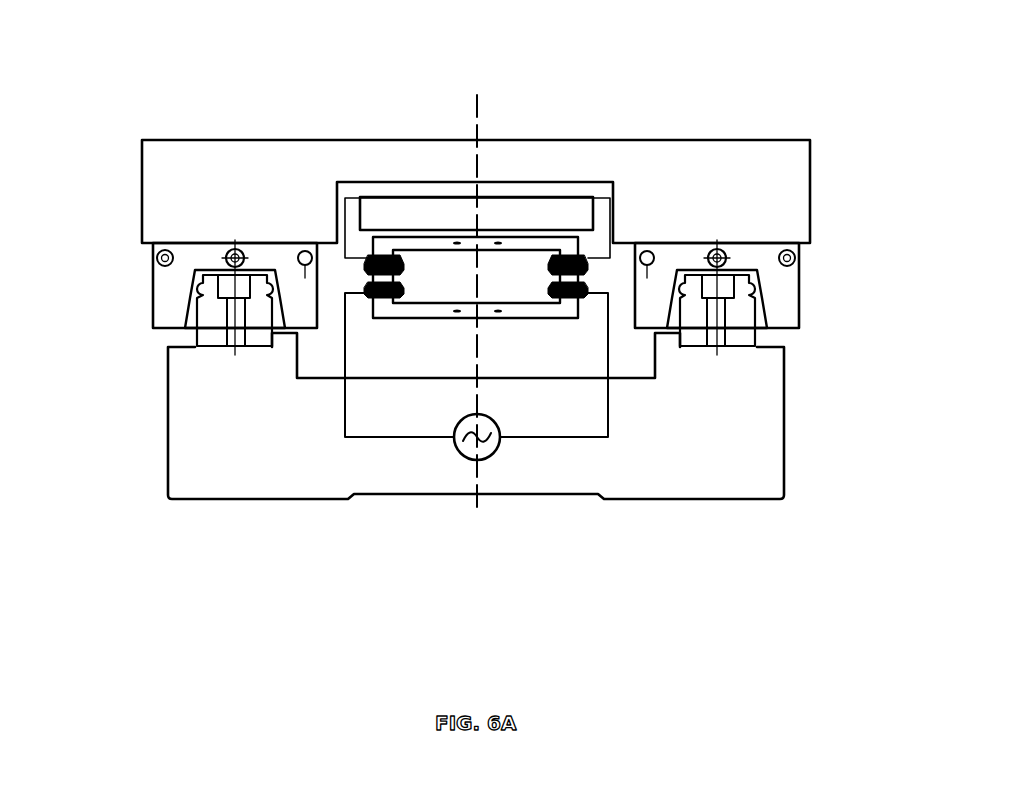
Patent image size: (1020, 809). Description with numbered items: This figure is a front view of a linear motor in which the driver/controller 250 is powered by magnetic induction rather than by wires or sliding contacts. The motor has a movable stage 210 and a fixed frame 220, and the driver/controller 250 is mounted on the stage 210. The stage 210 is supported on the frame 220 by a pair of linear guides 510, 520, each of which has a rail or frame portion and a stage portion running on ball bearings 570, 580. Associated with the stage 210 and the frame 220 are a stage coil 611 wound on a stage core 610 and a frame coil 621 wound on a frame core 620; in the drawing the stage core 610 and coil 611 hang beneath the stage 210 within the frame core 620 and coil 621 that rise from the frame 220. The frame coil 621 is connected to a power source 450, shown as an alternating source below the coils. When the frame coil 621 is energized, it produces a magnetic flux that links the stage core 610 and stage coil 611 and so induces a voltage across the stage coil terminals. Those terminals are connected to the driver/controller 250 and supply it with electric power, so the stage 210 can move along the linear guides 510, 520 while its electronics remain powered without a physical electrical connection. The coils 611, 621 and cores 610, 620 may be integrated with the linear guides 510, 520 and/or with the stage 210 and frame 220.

The stage 210 is at (213, 197).
The frame 220 is at (195, 477).
The driver/controller 250 is at (530, 205).
The power source 450 is at (468, 440).
The linear guide 510 is at (792, 289).
The linear guide 520 is at (163, 291).
The ball bearings 570 is at (192, 292).
The ball bearings 580 is at (754, 290).
The stage core 610 is at (402, 235).
The stage coil 611 is at (577, 242).
The frame core 620 is at (529, 310).
The frame coil 621 is at (583, 272).